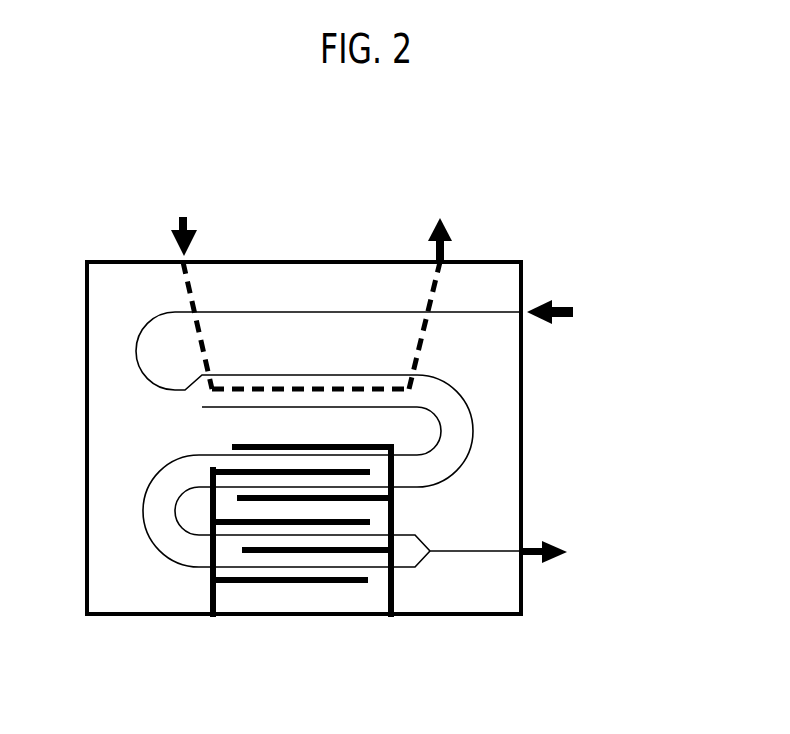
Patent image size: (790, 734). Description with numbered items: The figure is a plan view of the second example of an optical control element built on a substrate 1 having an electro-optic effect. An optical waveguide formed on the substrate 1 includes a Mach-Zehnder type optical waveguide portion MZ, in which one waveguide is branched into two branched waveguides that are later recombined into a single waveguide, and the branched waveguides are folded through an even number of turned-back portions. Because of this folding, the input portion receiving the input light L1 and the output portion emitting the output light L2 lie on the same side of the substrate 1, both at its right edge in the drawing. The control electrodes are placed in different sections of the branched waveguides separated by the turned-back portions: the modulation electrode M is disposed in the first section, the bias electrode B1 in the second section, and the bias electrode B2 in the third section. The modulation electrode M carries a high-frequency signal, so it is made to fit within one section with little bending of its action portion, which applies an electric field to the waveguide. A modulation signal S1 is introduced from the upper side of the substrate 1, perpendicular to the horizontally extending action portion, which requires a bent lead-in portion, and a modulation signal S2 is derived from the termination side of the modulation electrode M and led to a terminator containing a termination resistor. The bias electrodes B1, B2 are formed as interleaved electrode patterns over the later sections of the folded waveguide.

The substrate 1 is at (492, 262).
The Mach-Zehnder type optical waveguide portion MZ is at (392, 439).
The modulation electrode M is at (307, 388).
The modulation signal S1 is at (191, 288).
The modulation signal S2 is at (430, 288).
The input light L1 is at (566, 313).
The output light L2 is at (563, 554).
The bias electrode B1 is at (367, 473).
The bias electrode B2 is at (280, 552).